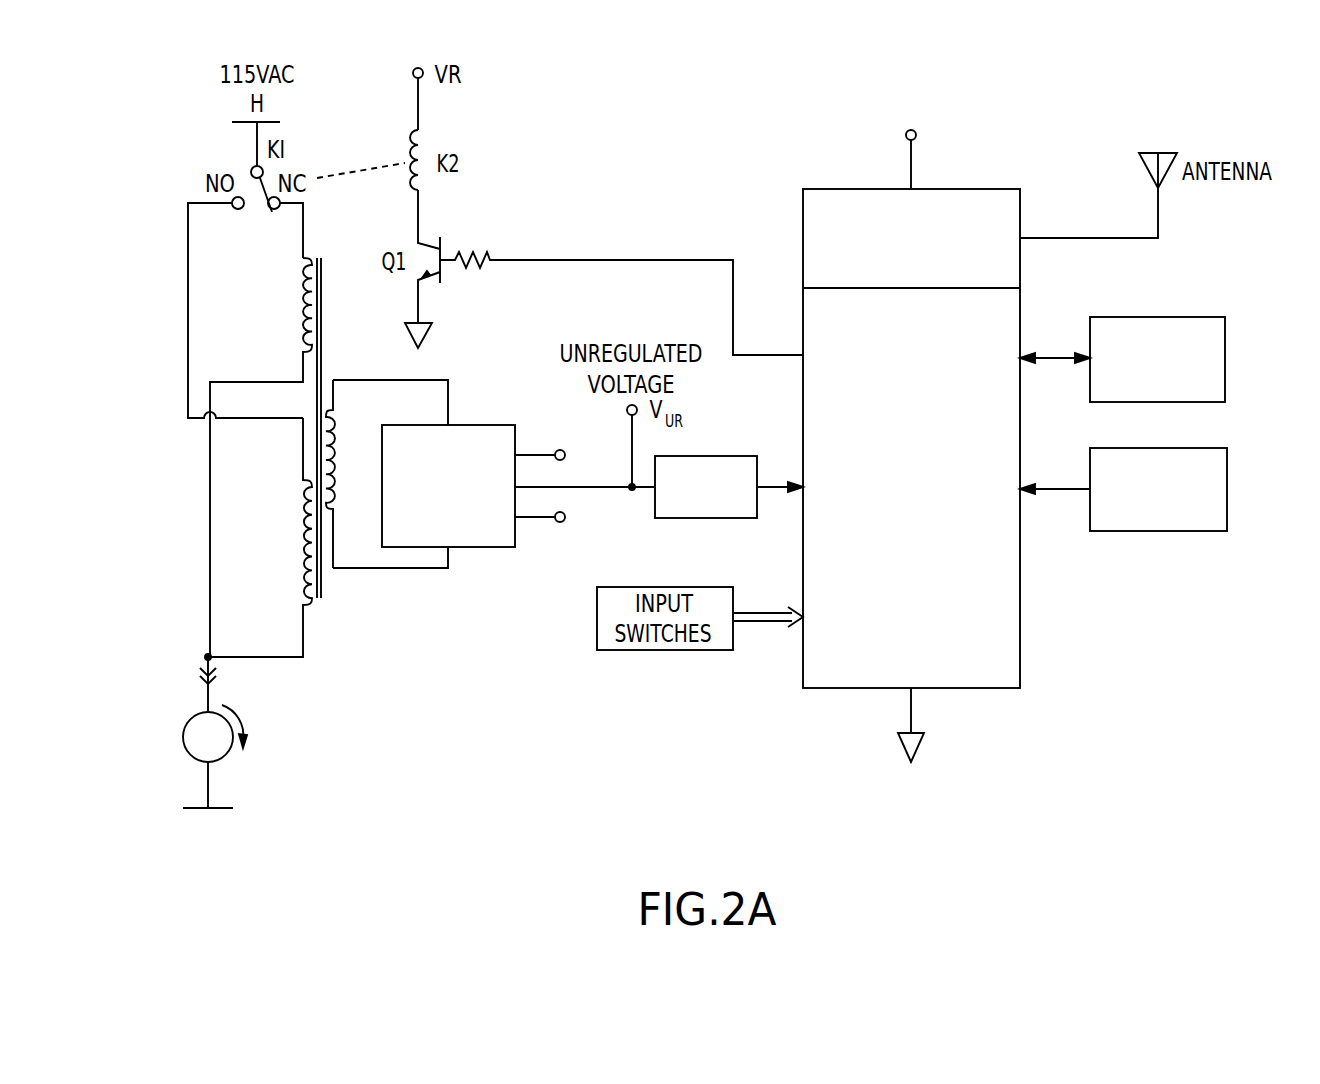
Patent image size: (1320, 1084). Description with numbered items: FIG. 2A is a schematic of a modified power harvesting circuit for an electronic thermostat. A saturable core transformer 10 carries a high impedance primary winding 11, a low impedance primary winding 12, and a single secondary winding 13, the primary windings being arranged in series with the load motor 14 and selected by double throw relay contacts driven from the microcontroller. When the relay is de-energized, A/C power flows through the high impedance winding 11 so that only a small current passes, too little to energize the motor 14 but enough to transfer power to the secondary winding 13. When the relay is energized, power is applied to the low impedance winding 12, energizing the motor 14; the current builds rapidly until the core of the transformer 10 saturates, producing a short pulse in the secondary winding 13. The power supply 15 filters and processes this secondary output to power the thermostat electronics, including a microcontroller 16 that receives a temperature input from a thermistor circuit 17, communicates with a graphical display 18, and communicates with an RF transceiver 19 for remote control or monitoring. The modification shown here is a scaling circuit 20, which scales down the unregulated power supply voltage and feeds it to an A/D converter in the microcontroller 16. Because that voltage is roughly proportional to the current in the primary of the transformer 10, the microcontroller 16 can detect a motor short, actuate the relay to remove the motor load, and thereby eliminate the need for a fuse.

The saturable core transformer 10 is at (331, 594).
The high impedance primary winding 11 is at (300, 309).
The low impedance primary winding 12 is at (300, 537).
The secondary winding 13 is at (340, 457).
The motor 14 is at (187, 722).
The power supply 15 is at (487, 425).
The microcontroller 16 is at (871, 442).
The thermistor circuit 17 is at (1157, 531).
The graphical display 18 is at (1158, 317).
The RF transceiver 19 is at (803, 228).
The scaling circuit 20 is at (707, 456).